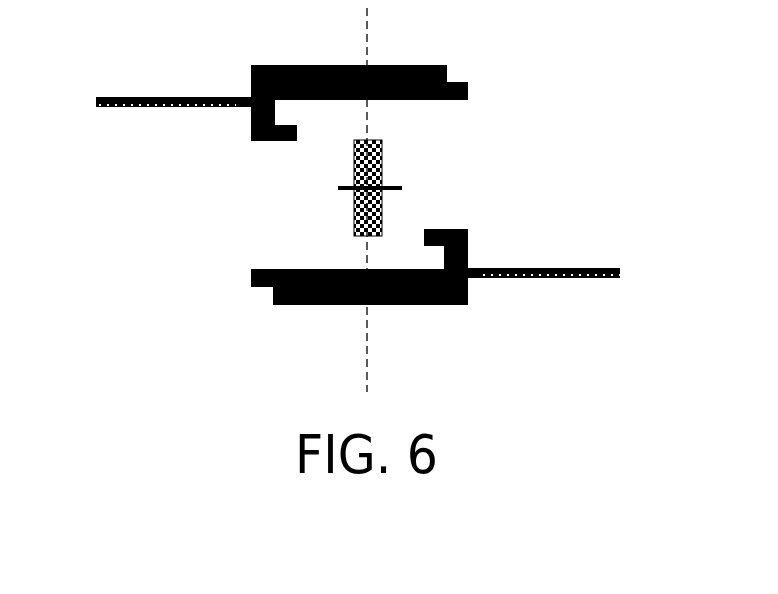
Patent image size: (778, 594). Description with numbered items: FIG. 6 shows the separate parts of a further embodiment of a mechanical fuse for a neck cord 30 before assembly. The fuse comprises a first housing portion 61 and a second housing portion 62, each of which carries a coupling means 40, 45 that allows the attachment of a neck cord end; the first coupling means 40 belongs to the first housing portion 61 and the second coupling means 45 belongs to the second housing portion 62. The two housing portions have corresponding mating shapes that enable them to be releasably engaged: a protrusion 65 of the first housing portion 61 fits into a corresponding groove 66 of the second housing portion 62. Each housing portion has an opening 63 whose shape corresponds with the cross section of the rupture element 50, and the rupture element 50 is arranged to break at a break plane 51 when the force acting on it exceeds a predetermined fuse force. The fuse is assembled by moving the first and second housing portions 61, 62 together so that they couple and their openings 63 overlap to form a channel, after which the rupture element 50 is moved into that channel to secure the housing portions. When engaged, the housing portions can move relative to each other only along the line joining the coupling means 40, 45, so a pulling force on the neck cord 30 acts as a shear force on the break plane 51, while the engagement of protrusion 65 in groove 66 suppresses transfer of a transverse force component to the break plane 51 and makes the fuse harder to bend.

The neck cord 30 is at (132, 97).
The first coupling means 40 is at (250, 97).
The second coupling means 45 is at (470, 268).
The rupture element 50 is at (382, 157).
The break plane 51 is at (402, 185).
The first housing portion 61 is at (422, 65).
The second housing portion 62 is at (413, 305).
The opening 63 is at (363, 100).
The protrusion 65 is at (460, 82).
The groove 66 is at (433, 230).